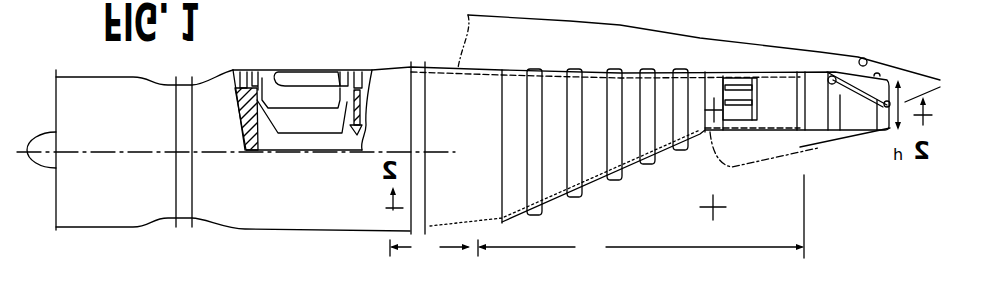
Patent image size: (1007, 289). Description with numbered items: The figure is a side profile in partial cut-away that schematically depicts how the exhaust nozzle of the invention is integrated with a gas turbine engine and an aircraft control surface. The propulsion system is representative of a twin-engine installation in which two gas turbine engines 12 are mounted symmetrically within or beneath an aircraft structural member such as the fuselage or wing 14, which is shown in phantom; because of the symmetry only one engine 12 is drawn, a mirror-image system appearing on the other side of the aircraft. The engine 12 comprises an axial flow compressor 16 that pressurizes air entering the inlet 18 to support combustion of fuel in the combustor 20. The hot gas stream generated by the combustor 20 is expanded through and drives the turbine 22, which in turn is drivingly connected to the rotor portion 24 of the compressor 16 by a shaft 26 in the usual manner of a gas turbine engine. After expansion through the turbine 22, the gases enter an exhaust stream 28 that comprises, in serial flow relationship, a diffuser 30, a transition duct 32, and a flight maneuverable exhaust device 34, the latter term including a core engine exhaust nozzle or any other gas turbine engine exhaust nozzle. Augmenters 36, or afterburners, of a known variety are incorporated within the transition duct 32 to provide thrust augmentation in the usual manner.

The gas turbine engine 12 is at (112, 234).
The wing 14 is at (532, 54).
The axial flow compressor 16 is at (246, 50).
The inlet 18 is at (56, 198).
The combustor 20 is at (307, 74).
The turbine 22 is at (356, 70).
The rotor portion 24 is at (240, 125).
The shaft 26 is at (310, 133).
The exhaust stream 28 is at (599, 60).
The diffuser 30 is at (434, 249).
The transition duct 32 is at (641, 217).
The flight maneuverable exhaust device 34 is at (831, 142).
The augmenters 36 is at (741, 89).